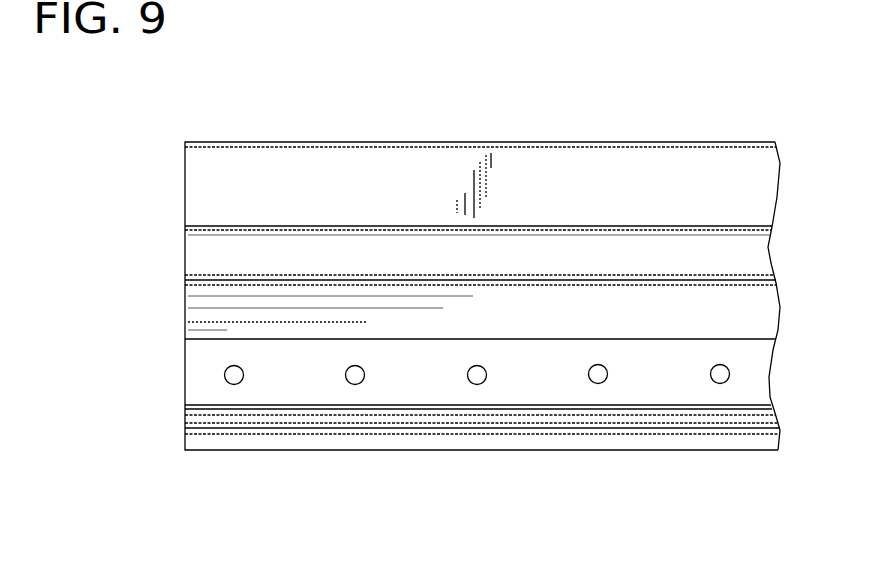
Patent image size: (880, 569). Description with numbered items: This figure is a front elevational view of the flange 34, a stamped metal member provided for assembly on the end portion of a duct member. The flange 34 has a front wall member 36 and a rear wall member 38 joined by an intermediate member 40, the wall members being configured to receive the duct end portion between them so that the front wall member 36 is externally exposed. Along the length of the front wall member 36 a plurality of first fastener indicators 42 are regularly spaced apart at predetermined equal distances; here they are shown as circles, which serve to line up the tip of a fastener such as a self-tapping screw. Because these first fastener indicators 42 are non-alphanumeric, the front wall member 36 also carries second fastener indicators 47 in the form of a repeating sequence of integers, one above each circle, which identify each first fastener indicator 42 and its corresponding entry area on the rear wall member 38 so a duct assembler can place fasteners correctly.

The flange 34 is at (177, 177).
The front wall member 36 is at (200, 378).
The rear wall member 38 is at (272, 435).
The intermediate member 40 is at (358, 163).
The first fastener indicators 42 is at (470, 383).
The second fastener indicators 47 is at (715, 353).